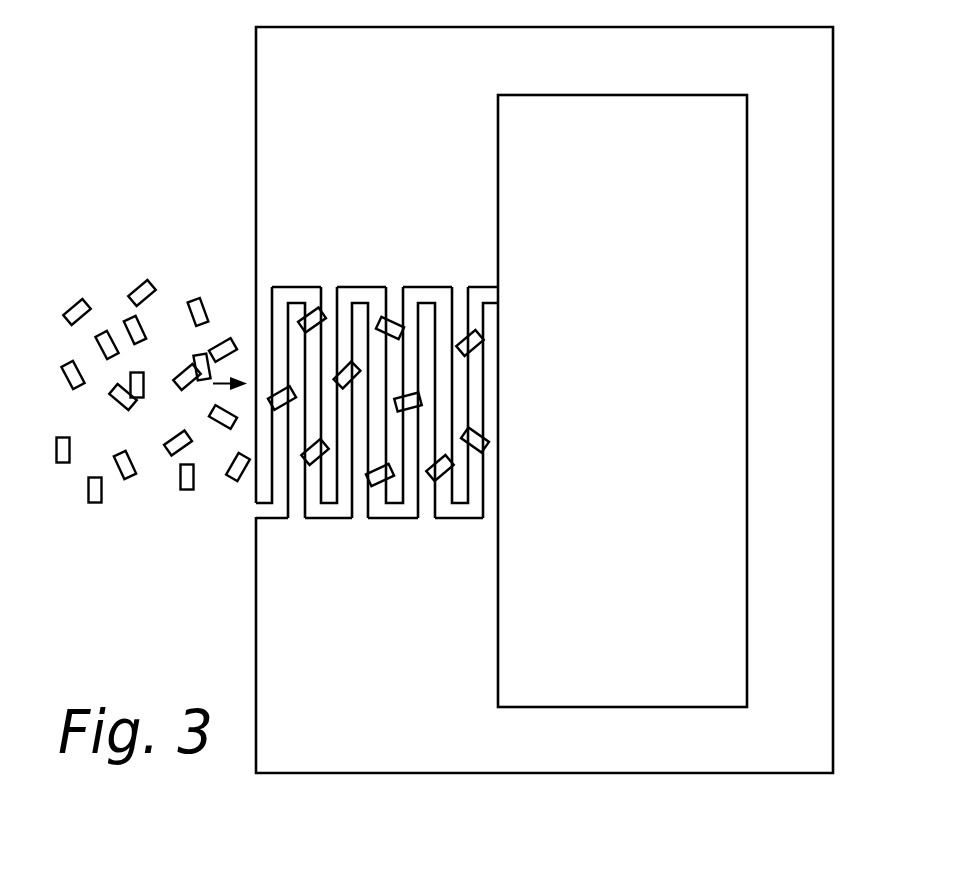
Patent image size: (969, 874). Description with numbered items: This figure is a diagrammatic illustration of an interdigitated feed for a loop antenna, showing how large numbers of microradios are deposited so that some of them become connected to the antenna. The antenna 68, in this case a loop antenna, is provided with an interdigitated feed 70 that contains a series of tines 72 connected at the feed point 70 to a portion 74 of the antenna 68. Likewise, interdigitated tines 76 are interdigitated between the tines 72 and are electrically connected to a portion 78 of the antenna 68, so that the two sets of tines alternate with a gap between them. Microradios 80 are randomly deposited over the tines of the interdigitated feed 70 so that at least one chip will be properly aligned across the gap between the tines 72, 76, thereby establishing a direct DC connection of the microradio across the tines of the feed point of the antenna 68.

The antenna 68 is at (833, 300).
The interdigitated feed 70 is at (525, 405).
The tines 72 is at (458, 297).
The portion of antenna 74 is at (397, 131).
The interdigitated tines 76 is at (297, 505).
The portion of antenna 78 is at (394, 687).
The microradios 80 is at (248, 517).